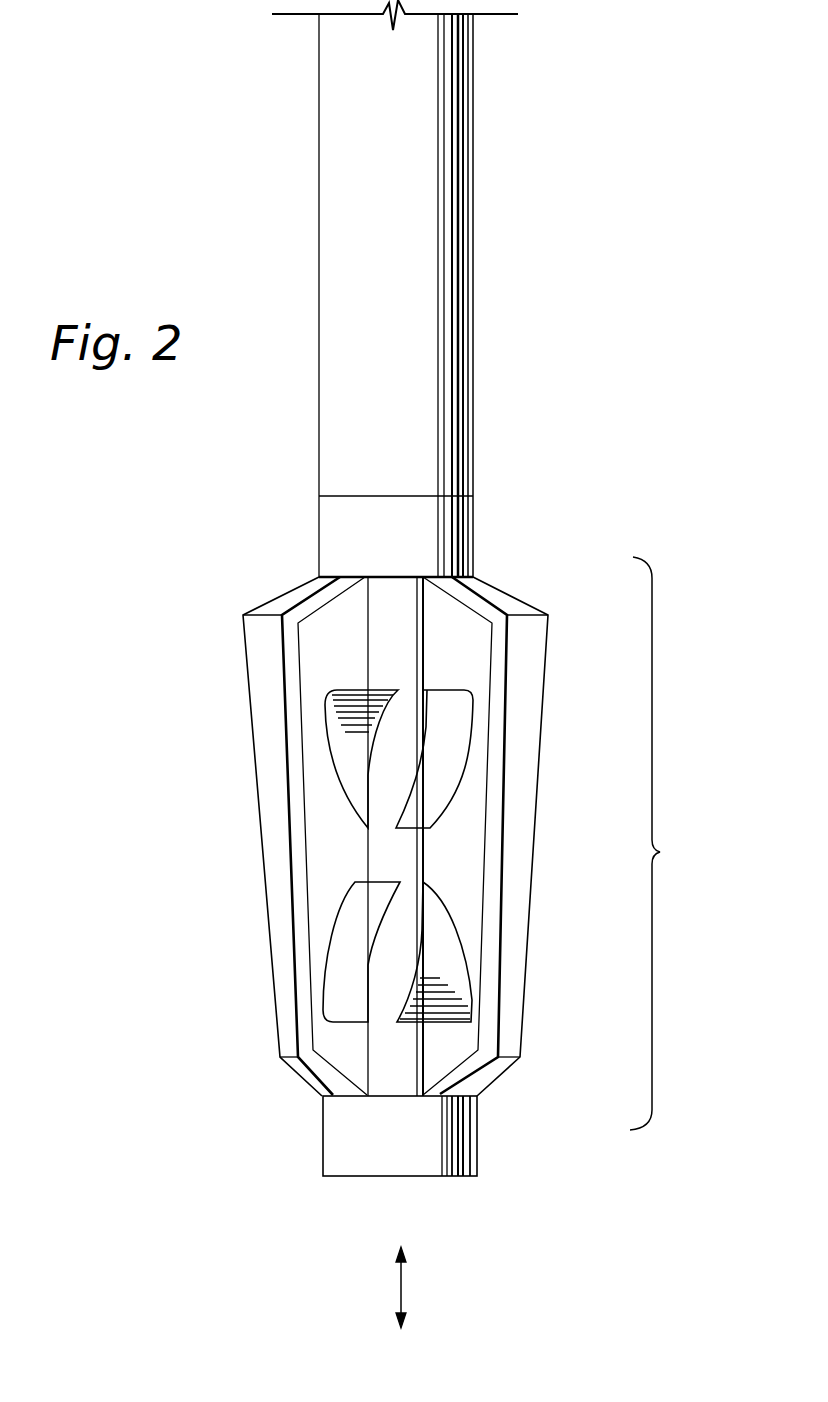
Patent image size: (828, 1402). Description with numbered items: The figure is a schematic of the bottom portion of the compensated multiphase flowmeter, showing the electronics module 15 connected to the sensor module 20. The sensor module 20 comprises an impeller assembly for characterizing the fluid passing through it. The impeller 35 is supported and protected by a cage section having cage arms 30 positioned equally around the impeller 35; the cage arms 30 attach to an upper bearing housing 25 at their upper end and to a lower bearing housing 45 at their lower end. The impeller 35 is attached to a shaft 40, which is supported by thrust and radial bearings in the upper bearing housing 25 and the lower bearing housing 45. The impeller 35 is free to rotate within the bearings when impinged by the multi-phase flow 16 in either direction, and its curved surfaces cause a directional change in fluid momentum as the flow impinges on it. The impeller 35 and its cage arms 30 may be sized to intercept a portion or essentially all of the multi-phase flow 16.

The electronics module 15 is at (328, 234).
The upper bearing housing 25 is at (327, 532).
The cage arms 30 is at (262, 733).
The shaft 40 is at (383, 637).
The impeller 35 is at (442, 918).
The lower bearing housing 45 is at (333, 1141).
The sensor module 20 is at (673, 843).
The multi-phase flow 16 is at (400, 1288).